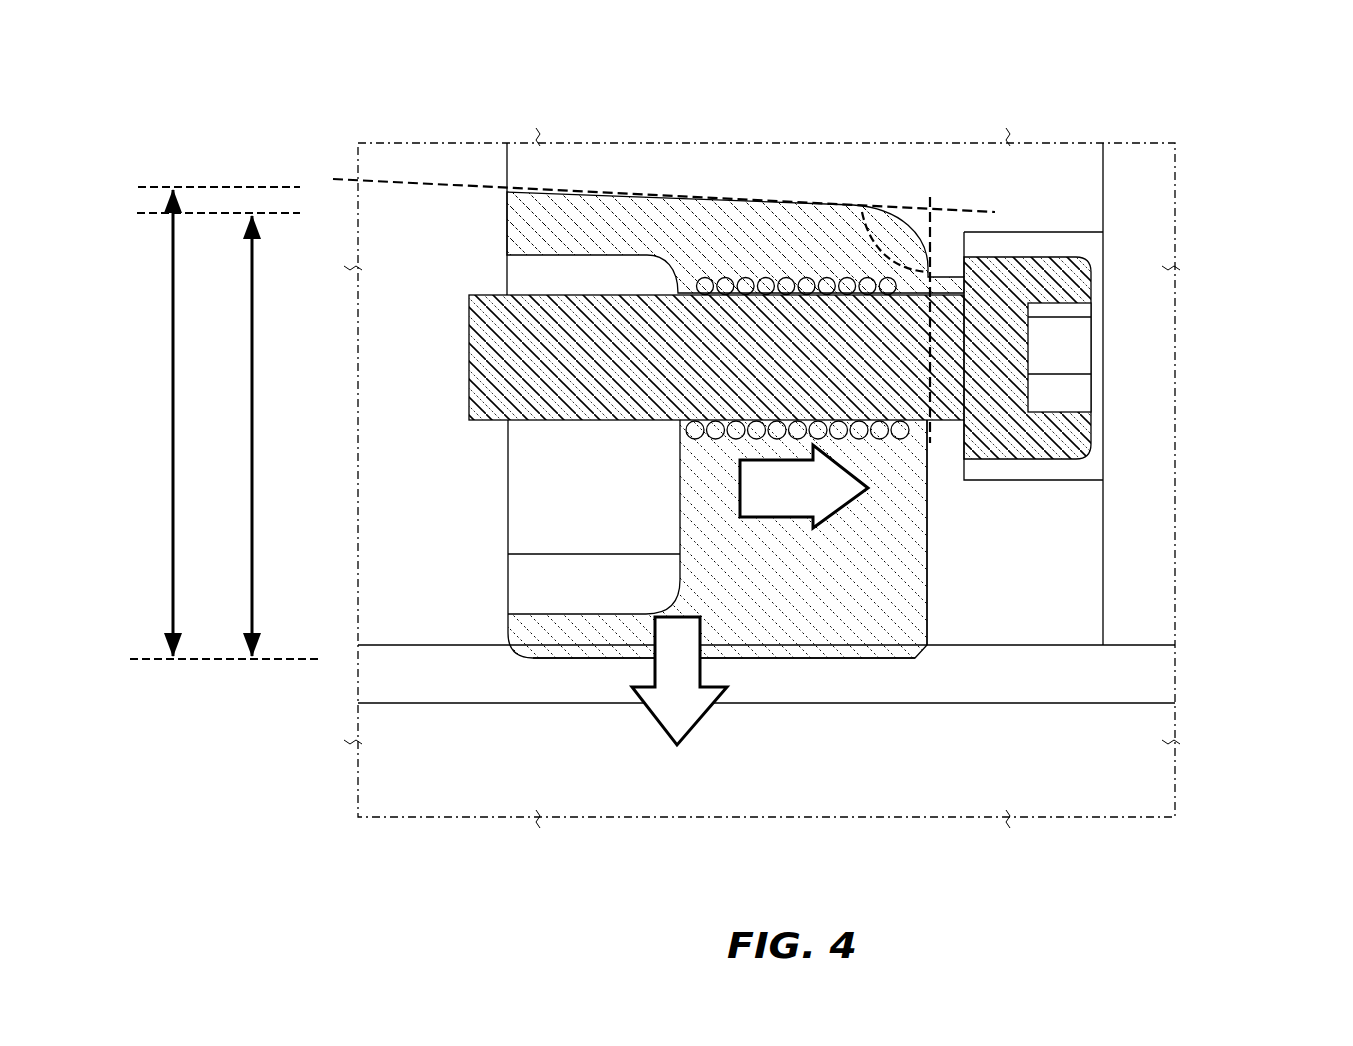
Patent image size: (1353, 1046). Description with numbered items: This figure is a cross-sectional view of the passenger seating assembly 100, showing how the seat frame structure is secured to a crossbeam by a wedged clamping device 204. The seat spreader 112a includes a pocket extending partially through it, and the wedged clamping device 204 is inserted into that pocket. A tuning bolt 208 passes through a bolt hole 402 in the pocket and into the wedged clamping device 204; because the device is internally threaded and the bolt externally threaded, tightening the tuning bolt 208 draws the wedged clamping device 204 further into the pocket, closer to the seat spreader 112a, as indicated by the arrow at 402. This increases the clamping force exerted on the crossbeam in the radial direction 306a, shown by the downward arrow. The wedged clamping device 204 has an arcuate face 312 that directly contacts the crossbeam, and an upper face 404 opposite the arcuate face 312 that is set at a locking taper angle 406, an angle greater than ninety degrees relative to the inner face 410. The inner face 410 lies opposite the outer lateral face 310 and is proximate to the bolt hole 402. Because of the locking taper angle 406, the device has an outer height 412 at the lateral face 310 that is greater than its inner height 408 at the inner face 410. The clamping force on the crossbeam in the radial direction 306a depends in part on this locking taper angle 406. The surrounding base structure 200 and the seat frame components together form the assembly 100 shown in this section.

The passenger seating assembly 100 is at (148, 112).
The seat spreader 112a is at (736, 172).
The base housing 200 is at (1005, 676).
The wedged clamping device 204 is at (773, 572).
The tuning bolt 208 is at (955, 362).
The radial direction 306a is at (678, 710).
The lateral face 310 is at (500, 228).
The arcuate face 312 is at (600, 665).
The bolt hole 402 is at (817, 503).
The upper face 404 is at (808, 200).
The locking taper angle 406 is at (862, 212).
The inner height 408 is at (253, 543).
The inner face 410 is at (928, 524).
The outer height 412 is at (170, 500).